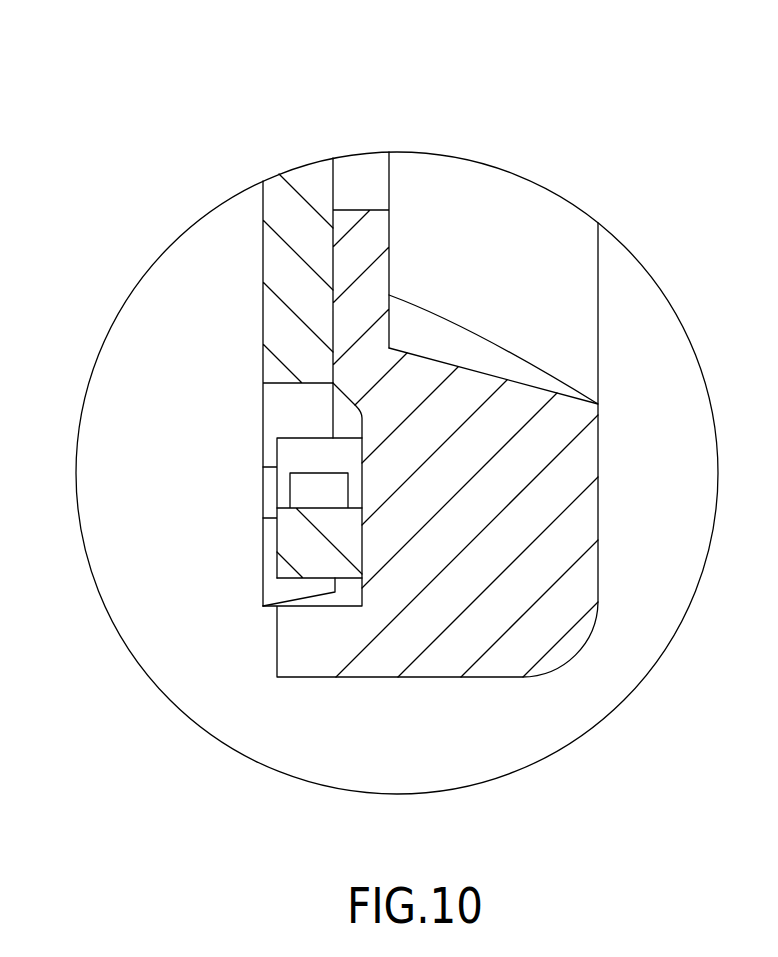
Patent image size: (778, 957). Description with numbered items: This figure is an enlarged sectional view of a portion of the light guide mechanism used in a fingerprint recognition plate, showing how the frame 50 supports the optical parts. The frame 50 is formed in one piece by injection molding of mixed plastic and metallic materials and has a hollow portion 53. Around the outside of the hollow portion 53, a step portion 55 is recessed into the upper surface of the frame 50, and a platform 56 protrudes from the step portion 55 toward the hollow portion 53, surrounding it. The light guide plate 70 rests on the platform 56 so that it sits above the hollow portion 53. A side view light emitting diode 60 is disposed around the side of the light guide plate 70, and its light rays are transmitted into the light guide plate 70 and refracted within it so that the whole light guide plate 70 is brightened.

The frame 50 is at (510, 600).
The hollow portion 53 is at (480, 208).
The step portion 55 is at (362, 430).
The platform 56 is at (360, 240).
The side view light emitting diode 60 is at (295, 542).
The light guide plate 70 is at (295, 277).